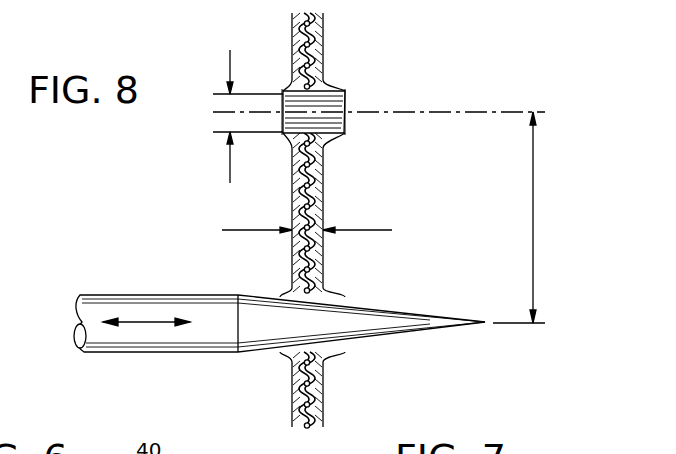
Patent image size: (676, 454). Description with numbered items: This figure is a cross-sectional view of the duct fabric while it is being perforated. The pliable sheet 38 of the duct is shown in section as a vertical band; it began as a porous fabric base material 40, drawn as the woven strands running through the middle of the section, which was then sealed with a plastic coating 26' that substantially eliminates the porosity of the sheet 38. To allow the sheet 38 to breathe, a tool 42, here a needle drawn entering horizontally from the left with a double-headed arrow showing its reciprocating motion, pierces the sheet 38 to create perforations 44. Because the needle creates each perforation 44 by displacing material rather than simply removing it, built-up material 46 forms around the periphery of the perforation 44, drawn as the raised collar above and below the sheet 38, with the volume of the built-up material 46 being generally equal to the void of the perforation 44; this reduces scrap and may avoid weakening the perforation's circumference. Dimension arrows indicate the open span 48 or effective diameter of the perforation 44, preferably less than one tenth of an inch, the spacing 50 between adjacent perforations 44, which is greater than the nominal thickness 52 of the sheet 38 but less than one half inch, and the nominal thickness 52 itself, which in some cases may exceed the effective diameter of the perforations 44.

The plastic coating 26' is at (344, 220).
The pliable sheet 38 is at (292, 198).
The fabric base material 40 is at (317, 62).
The tool 42 is at (173, 295).
The perforations 44 is at (347, 120).
The built-up material 46 is at (284, 89).
The open span 48 is at (230, 158).
The spacing 50 is at (532, 184).
The nominal thickness 52 is at (243, 230).